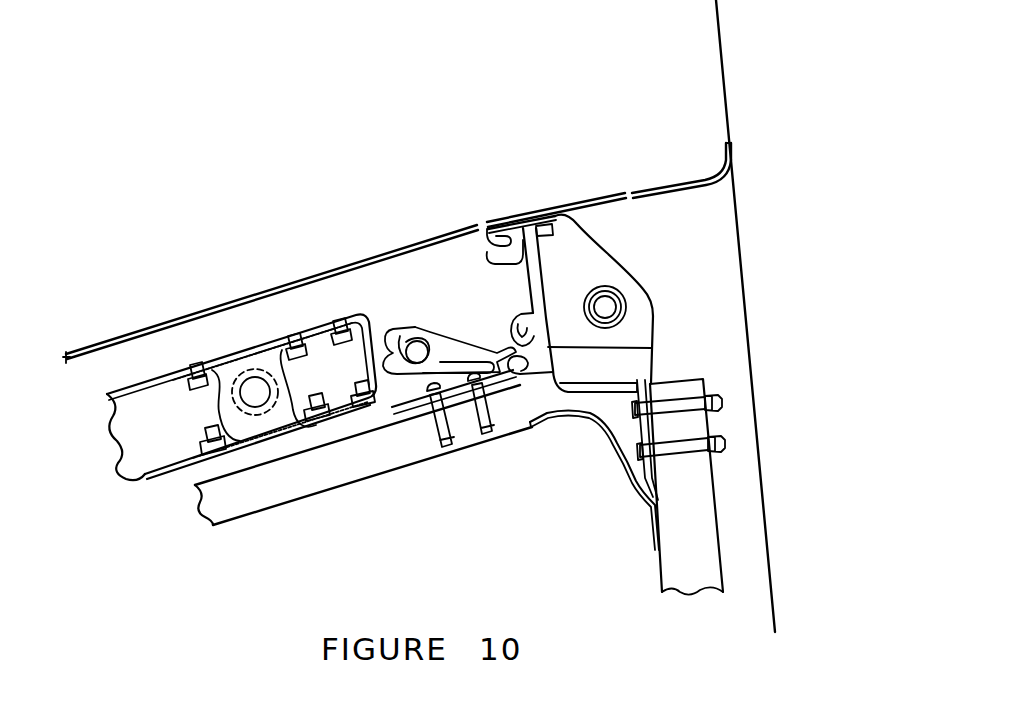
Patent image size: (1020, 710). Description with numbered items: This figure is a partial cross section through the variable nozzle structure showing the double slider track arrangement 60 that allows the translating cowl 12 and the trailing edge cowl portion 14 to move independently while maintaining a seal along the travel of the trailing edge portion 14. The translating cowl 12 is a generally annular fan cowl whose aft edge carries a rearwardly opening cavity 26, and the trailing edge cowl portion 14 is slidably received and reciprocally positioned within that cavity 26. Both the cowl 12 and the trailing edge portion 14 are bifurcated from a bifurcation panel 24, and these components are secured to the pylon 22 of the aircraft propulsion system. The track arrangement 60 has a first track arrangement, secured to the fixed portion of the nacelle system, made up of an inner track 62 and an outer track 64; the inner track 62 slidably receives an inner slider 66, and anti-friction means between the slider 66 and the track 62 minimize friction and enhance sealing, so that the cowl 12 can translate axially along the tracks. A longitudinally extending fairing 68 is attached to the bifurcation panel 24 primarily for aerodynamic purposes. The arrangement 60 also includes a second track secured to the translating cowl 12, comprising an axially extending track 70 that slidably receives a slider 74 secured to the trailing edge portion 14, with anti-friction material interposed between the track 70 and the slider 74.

The translating fan cowl 12 is at (234, 292).
The trailing edge cowl portion 14 is at (144, 377).
The pylon 22 is at (720, 59).
The bifurcation panel 24 is at (662, 561).
The rearwardly opening cavity 26 is at (438, 310).
The double slider track arrangement 60 is at (452, 280).
The inner track 62 is at (512, 322).
The outer track 64 is at (509, 237).
The inner slider 66 is at (652, 348).
The fairing 68 is at (611, 431).
The axially extending track 70 is at (393, 330).
The slider 74 is at (398, 393).